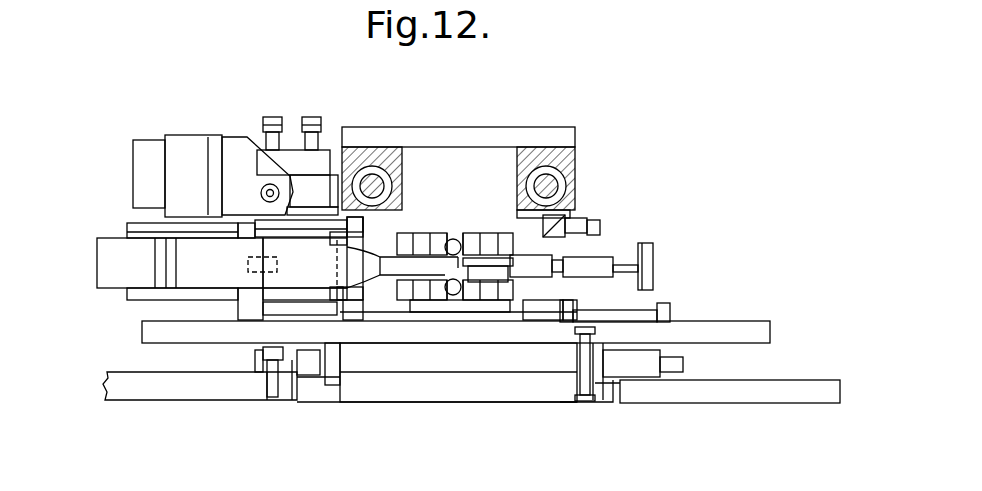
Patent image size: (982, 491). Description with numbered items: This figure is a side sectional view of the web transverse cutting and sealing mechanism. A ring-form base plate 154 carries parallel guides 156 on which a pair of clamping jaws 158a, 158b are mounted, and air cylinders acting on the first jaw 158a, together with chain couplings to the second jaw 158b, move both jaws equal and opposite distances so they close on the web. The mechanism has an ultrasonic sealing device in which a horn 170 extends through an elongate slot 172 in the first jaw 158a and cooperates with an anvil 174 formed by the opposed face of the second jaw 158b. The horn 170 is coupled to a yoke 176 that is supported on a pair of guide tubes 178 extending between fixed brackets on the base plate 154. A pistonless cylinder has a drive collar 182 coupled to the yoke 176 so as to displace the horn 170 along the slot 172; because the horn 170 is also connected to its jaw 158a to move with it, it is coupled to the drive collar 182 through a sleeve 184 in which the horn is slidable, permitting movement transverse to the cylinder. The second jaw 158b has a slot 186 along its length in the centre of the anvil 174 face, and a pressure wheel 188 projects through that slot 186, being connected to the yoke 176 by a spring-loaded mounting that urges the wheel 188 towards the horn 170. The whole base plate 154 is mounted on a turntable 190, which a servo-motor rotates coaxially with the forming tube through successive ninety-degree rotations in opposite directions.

The base plate 154 is at (730, 330).
The parallel guides 156 is at (640, 313).
The first clamping jaw 158a is at (410, 233).
The second clamping jaw 158b is at (513, 232).
The horn 170 is at (407, 267).
The elongate slot 172 is at (448, 233).
The anvil 174 is at (463, 233).
The yoke 176 is at (560, 140).
The guide tubes 178 is at (563, 158).
The drive collar 182 is at (217, 142).
The sleeve 184 is at (148, 297).
The slot 186 is at (462, 263).
The pressure wheel 188 is at (503, 267).
The turntable 190 is at (737, 390).